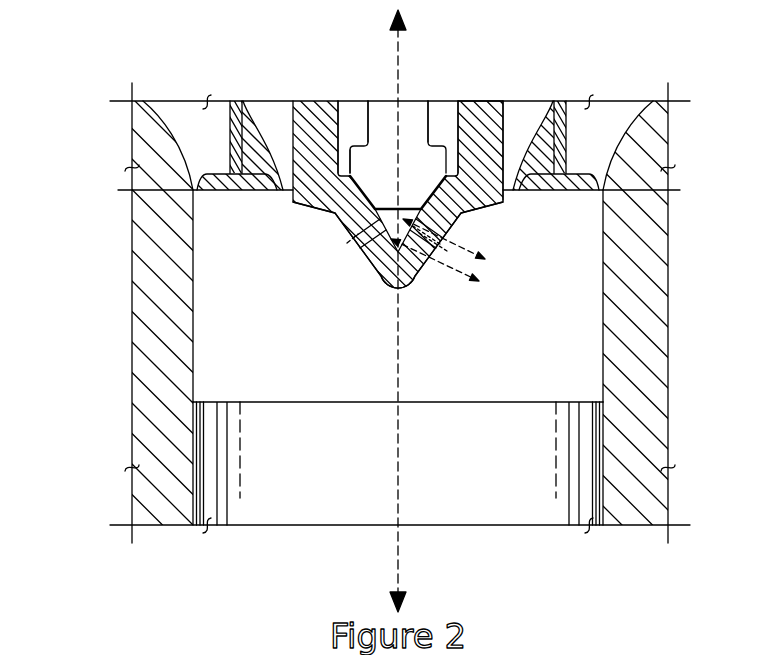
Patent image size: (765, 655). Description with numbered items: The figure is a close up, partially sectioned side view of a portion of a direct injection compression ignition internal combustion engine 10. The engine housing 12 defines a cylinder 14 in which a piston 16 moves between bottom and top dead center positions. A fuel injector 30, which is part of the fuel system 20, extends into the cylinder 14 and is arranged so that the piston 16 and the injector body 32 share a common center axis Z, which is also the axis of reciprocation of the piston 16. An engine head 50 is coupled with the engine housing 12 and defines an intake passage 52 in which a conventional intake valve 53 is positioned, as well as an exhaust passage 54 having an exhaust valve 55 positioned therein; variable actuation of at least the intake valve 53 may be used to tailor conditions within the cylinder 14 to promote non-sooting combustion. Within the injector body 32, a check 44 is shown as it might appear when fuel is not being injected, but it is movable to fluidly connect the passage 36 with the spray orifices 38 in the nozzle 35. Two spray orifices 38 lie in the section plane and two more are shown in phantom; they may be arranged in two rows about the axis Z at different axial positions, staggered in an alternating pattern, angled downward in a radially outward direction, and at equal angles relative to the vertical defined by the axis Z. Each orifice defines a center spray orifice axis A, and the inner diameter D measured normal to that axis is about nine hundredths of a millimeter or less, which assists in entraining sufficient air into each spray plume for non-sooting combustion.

The internal combustion engine 10 is at (60, 339).
The engine housing 12 is at (637, 333).
The cylinder 14 is at (584, 371).
The piston 16 is at (584, 419).
The fuel system 20 is at (300, 96).
The fuel injector 30 is at (504, 96).
The injector body 32 is at (486, 112).
The nozzle 35 is at (293, 202).
The passage 36 is at (343, 108).
The spray orifices 38 is at (350, 237).
The check 44 is at (418, 113).
The engine head 50 is at (143, 131).
The intake passage 52 is at (163, 101).
The intake valve 53 is at (236, 110).
The exhaust passage 54 is at (633, 115).
The rib 55 is at (560, 108).
The orifice diameter D is at (343, 247).
The spray orifice center axis A is at (480, 258).
The common center axis Z is at (405, 430).